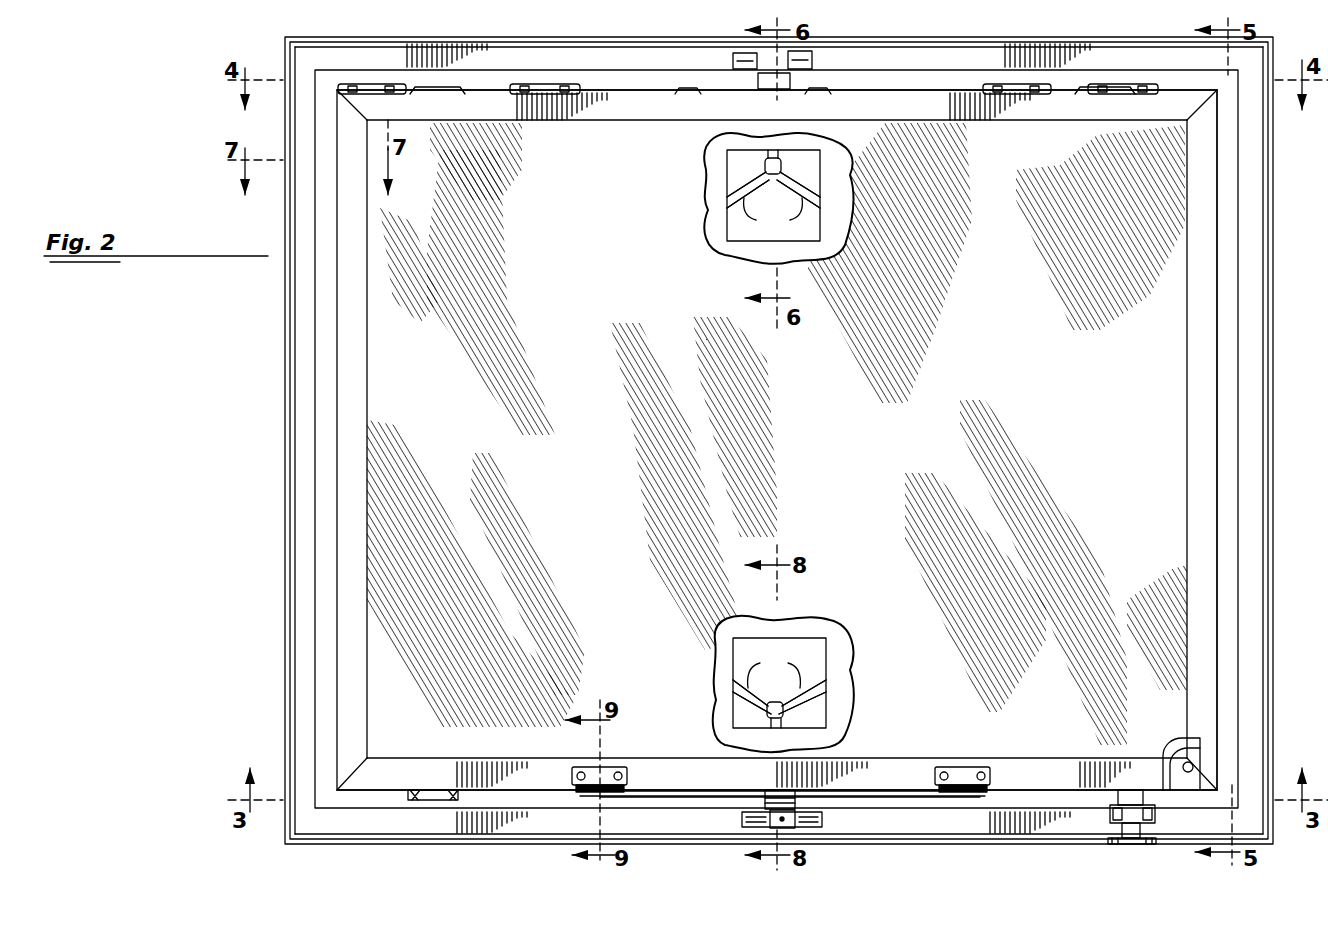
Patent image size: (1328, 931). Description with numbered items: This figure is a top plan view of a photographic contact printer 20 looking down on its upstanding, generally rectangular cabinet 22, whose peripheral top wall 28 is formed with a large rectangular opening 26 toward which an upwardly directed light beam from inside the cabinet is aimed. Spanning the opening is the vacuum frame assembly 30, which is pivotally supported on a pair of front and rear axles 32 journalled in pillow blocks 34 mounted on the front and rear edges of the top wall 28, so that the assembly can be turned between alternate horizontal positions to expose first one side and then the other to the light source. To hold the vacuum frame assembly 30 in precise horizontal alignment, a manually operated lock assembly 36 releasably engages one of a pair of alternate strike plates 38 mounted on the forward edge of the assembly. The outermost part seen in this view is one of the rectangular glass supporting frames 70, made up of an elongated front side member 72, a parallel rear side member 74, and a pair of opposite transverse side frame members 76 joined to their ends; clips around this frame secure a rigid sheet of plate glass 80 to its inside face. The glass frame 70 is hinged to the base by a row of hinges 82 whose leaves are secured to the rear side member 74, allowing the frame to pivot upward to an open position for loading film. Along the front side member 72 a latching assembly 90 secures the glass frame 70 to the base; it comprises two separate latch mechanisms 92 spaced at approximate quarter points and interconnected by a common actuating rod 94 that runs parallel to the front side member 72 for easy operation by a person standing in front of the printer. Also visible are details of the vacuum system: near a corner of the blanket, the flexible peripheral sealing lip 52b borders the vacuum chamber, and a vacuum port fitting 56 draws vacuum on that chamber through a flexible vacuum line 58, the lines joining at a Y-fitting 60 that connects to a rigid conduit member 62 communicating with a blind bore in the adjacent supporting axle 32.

The photographic contact printer 20 is at (900, 868).
The cabinet 22 is at (284, 470).
The opening 26 is at (318, 388).
The peripheral top wall 28 is at (300, 528).
The vacuum frame assembly 30 is at (1226, 340).
The axles 32 is at (778, 74).
The pillow blocks 34 is at (784, 55).
The lock assembly 36 is at (1150, 818).
The strike plates 38 is at (432, 800).
The peripheral sealing lip 52b is at (1190, 746).
The vacuum port fitting 56 is at (1192, 766).
The flexible vacuum line 58 is at (779, 442).
The Y-fitting 60 is at (796, 177).
The rigid conduit member 62 is at (729, 180).
The glass supporting frame 70 is at (1214, 273).
The front side member 72 is at (1045, 757).
The rear side member 74 is at (948, 116).
The transverse side frame members 76 is at (370, 400).
The plate glass 80 is at (778, 420).
The hinges 82 is at (370, 84).
The latching assembly 90 is at (693, 800).
The latch mechanisms 92 is at (600, 767).
The actuating rod 94 is at (922, 797).